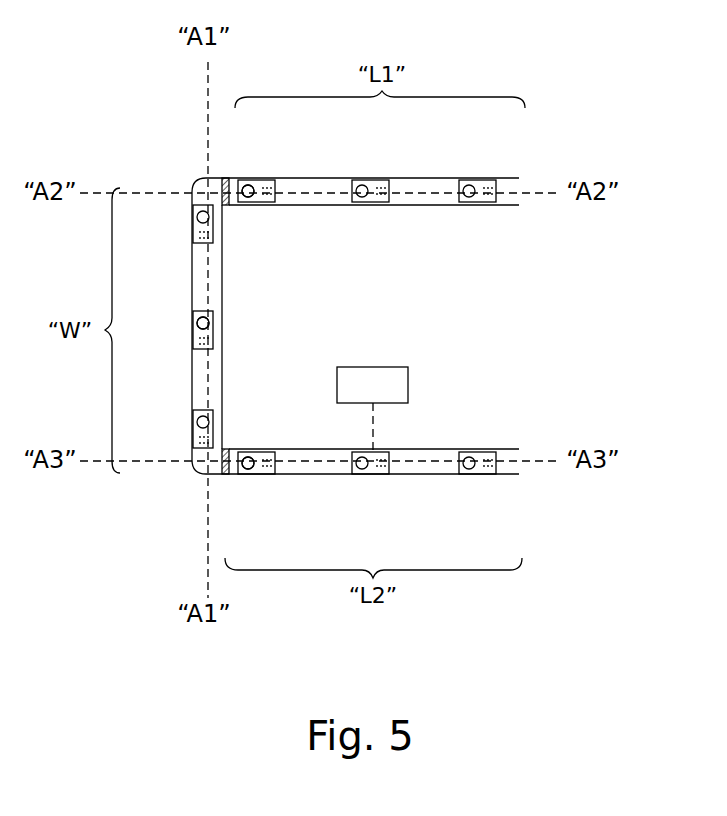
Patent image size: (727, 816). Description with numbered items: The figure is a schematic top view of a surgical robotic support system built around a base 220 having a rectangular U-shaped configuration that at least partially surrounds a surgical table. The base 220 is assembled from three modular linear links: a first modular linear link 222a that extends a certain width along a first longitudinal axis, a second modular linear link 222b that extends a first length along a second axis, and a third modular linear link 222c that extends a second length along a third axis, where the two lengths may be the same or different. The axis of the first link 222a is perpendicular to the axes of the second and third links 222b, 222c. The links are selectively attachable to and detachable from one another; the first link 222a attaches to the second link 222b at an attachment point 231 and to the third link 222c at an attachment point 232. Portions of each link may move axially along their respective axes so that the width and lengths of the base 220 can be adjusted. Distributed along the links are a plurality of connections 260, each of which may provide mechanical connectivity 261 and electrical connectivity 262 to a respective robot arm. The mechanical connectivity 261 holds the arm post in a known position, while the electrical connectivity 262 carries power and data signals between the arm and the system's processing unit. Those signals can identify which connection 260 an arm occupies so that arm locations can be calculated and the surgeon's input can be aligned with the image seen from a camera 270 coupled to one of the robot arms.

The base 220 is at (167, 502).
The first modular linear link 222a is at (214, 288).
The second modular linear link 222b is at (447, 200).
The third modular linear link 222c is at (447, 453).
The attachment point 231 is at (229, 205).
The attachment point 232 is at (229, 449).
The connection 260 is at (275, 178).
The mechanical connectivity 261 is at (248, 185).
The electrical connectivity 262 is at (273, 198).
The camera 270 is at (372, 409).